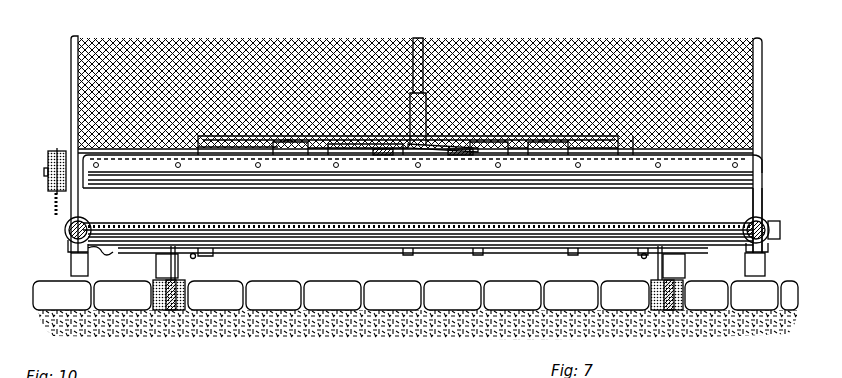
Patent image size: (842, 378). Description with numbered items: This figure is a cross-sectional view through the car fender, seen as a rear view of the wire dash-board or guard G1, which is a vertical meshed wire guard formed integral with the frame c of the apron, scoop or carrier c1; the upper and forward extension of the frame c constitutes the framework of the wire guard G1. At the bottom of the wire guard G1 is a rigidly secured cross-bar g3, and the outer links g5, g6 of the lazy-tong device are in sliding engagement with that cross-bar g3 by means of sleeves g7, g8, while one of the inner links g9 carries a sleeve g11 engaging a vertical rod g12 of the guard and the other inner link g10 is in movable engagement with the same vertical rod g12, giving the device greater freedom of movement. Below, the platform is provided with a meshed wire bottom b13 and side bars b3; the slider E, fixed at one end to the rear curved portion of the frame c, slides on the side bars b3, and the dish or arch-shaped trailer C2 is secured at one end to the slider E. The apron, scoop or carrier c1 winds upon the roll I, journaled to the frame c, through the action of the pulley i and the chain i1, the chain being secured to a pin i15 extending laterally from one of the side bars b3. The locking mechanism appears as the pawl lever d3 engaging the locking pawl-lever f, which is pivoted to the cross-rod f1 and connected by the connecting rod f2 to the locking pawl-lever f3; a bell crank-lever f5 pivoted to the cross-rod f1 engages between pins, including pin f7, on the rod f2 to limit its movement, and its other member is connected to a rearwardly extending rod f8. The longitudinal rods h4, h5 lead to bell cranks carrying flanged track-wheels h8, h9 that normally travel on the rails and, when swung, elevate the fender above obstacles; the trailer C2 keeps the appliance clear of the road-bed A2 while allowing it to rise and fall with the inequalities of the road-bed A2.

The wire guard or dash G1 is at (392, 93).
The pulley i is at (45, 145).
The chain i1 is at (38, 168).
The pin i15 is at (48, 205).
The trailer C2 is at (736, 257).
The vertical rod g12 is at (415, 21).
The frame c is at (756, 152).
The pawl lever d3 is at (766, 222).
The locking pawl-lever f is at (765, 240).
The slider E is at (744, 196).
The side bars b3 is at (86, 218).
The apron, scoop or carrier c1 is at (118, 220).
The cross-bar g3 is at (210, 148).
The sleeve g8 is at (262, 148).
The outer link g6 is at (313, 150).
The inner link g10 is at (365, 150).
The sleeve g11 is at (406, 148).
The inner link g9 is at (442, 148).
The roll I is at (487, 150).
The outer link g5 is at (528, 150).
The sleeve g7 is at (575, 150).
The meshed wire bottom b13 is at (614, 221).
The locking pawl-lever f3 is at (112, 240).
The longitudinal rod h5 is at (188, 249).
The flanged wheel h9 is at (178, 266).
The connecting rod f2 is at (303, 239).
The cross-rod f1 is at (352, 238).
The rod f8 is at (403, 243).
The bell crank-lever f5 is at (470, 239).
The pin f7 is at (508, 239).
The longitudinal rod h4 is at (632, 249).
The flanged wheel h8 is at (662, 264).
The road-bed A2 is at (428, 290).